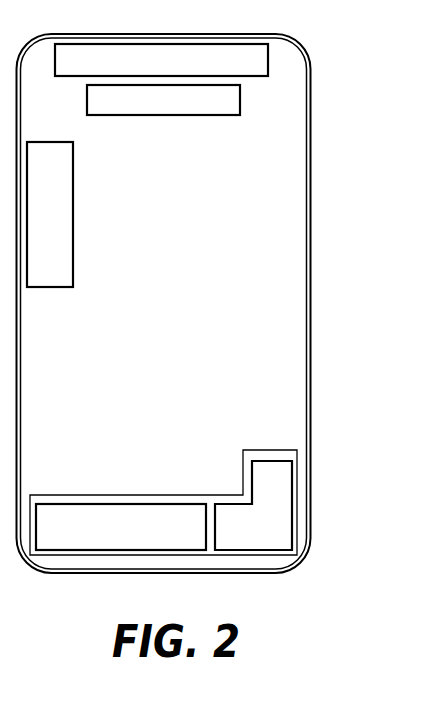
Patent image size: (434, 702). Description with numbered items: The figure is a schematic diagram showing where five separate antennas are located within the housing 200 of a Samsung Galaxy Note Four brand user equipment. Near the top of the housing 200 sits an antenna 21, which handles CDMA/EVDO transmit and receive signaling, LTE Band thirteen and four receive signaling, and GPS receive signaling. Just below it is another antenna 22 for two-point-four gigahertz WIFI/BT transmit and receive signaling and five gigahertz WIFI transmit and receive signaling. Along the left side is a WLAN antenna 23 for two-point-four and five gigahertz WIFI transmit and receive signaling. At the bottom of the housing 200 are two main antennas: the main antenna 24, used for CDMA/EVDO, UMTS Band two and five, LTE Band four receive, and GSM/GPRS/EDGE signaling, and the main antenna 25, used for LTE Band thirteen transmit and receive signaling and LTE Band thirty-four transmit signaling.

The housing 200 is at (208, 291).
The antenna 21 is at (161, 60).
The antenna 22 is at (163, 100).
The WLAN antenna 23 is at (50, 214).
The main antenna 24 is at (121, 527).
The main antenna 25 is at (253, 505).